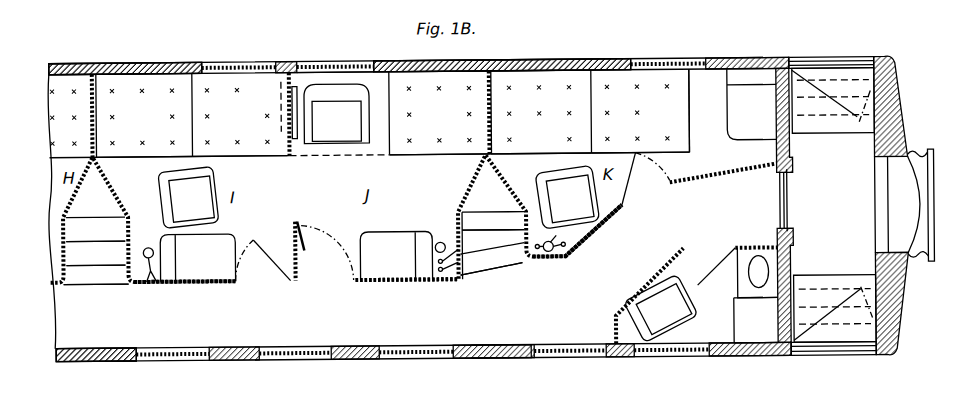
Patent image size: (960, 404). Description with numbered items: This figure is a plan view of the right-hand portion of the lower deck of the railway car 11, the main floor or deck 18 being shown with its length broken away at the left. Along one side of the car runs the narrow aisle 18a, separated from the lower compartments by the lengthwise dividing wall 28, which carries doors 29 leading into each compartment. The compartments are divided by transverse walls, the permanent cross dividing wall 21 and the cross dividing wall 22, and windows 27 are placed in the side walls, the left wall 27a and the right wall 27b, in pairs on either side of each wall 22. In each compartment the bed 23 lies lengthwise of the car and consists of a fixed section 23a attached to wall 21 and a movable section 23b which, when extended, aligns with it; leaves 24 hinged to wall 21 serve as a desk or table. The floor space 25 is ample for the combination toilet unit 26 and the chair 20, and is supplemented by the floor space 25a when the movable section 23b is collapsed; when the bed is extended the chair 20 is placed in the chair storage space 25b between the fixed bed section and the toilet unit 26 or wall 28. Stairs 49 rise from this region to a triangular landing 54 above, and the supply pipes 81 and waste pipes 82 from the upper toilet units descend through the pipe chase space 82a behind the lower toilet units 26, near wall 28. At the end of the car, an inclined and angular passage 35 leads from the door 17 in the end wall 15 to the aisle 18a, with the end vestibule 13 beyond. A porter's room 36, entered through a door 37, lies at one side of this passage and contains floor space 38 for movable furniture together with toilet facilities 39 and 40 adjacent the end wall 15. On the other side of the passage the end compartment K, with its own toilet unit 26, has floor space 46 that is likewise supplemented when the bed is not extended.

The car 11 is at (178, 58).
The end vestibule 13 is at (864, 206).
The end wall 15 is at (785, 140).
The door 17 is at (786, 205).
The main floor or deck 18 is at (423, 328).
The aisle 18a is at (497, 333).
The chair 20 is at (427, 214).
The cross dividing wall 21 is at (92, 111).
The cross dividing wall 22 is at (283, 127).
The bed 23 is at (132, 80).
The fixed section 23a is at (344, 113).
The movable section 23b is at (441, 124).
The shelves or leaves 24 is at (287, 96).
The floor space 25 is at (334, 172).
The supplemental floor space 25a is at (341, 78).
The chair storage space 25b is at (572, 237).
The toilet unit 26 is at (737, 99).
The window 27 is at (247, 61).
The left side wall 27a is at (75, 60).
The right side wall 27b is at (100, 358).
The lengthwise dividing wall 28 is at (202, 281).
The door 29 is at (272, 263).
The inclined and angular passage 35 is at (665, 214).
The porter's room 36 is at (735, 326).
The door 37 is at (722, 256).
The floor space 38 is at (625, 312).
The toilet facility 39 is at (740, 308).
The toilet facility 40 is at (755, 252).
The floor space 46 is at (700, 118).
The stairs 49 is at (100, 283).
The landing 54 is at (478, 184).
The supply pipes 81 is at (160, 279).
The waste pipes 82 is at (150, 280).
The pipe chase space 82a is at (137, 256).